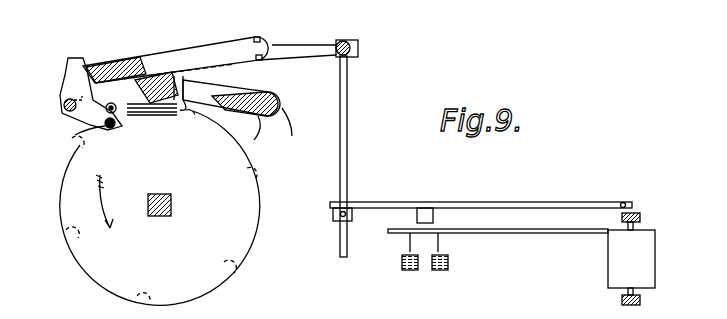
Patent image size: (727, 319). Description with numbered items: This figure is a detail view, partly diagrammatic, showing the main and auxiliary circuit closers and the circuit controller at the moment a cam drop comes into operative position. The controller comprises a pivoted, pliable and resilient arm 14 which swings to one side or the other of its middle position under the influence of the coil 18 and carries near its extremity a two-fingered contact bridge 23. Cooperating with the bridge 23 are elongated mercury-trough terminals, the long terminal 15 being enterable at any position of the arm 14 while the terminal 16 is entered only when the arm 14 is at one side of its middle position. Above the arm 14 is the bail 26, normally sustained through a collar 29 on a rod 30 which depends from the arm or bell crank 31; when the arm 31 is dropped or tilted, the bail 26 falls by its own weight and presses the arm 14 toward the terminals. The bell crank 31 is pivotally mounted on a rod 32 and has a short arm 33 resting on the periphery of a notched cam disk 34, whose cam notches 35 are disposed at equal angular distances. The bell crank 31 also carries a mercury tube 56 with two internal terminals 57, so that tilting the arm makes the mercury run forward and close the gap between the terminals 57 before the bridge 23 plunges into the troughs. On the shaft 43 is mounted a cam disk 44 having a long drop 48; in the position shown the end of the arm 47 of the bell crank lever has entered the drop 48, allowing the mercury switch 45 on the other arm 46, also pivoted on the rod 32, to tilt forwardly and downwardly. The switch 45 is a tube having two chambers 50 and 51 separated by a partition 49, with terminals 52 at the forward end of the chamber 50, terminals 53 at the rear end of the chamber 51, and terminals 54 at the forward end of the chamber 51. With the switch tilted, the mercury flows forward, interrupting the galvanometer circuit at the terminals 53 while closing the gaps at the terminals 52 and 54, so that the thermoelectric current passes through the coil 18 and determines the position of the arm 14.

The pivoted arm 14 is at (526, 233).
The long terminal 15 is at (412, 272).
The terminal 16 is at (440, 272).
The coil 18 is at (643, 264).
The contact bridge 23 is at (408, 243).
The bail 26 is at (500, 203).
The collar 29 is at (338, 216).
The rod 30 is at (347, 148).
The arm or bell crank 31 is at (68, 71).
The rod 32 is at (63, 111).
The short arm 33 is at (104, 113).
The notched cam disk 34 is at (150, 110).
The cam notches 35 is at (200, 112).
The shaft 43 is at (171, 205).
The cam disks 44 is at (253, 222).
The mercury switch 45 is at (220, 112).
The arm of bell crank lever 46 is at (68, 88).
The arm 47 is at (75, 135).
The long drop 48 is at (110, 122).
The partition 49 is at (169, 75).
The chamber 50 is at (247, 82).
The chamber 51 is at (163, 65).
The terminals 52 is at (283, 96).
The terminals 53 is at (192, 96).
The terminals 54 is at (178, 74).
The tube 56 is at (217, 52).
The internal terminals 57 is at (285, 30).